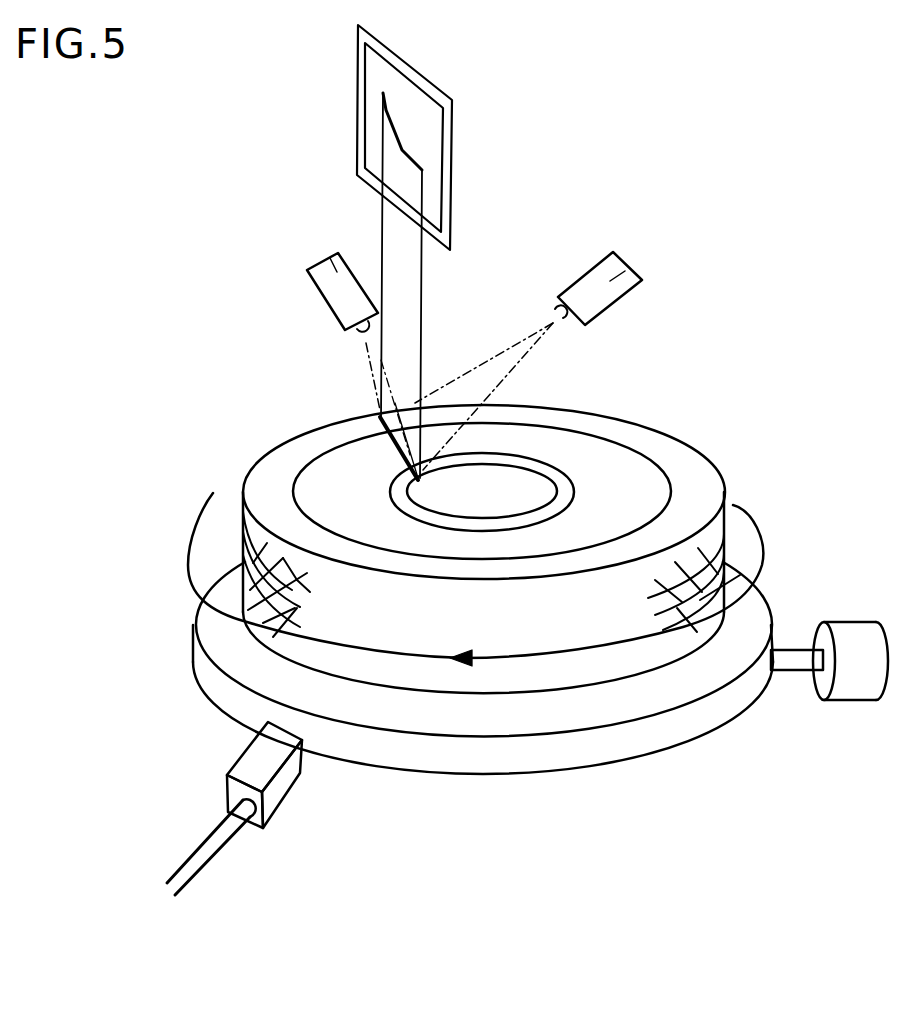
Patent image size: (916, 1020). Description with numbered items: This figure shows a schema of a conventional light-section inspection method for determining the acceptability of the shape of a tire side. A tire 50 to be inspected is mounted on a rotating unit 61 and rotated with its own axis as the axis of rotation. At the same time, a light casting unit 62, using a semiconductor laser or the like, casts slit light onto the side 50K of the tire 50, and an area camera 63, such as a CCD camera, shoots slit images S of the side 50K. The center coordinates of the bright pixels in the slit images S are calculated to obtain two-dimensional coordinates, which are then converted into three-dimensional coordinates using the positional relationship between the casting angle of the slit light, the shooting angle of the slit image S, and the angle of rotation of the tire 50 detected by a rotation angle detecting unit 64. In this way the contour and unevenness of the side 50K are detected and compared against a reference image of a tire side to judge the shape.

The slit image S is at (427, 140).
The tire 50 is at (688, 470).
The side 50K is at (344, 482).
The rotating unit 61 is at (748, 628).
The light casting unit 62 is at (326, 258).
The area camera 63 is at (637, 260).
The rotation angle detecting unit 64 is at (253, 777).